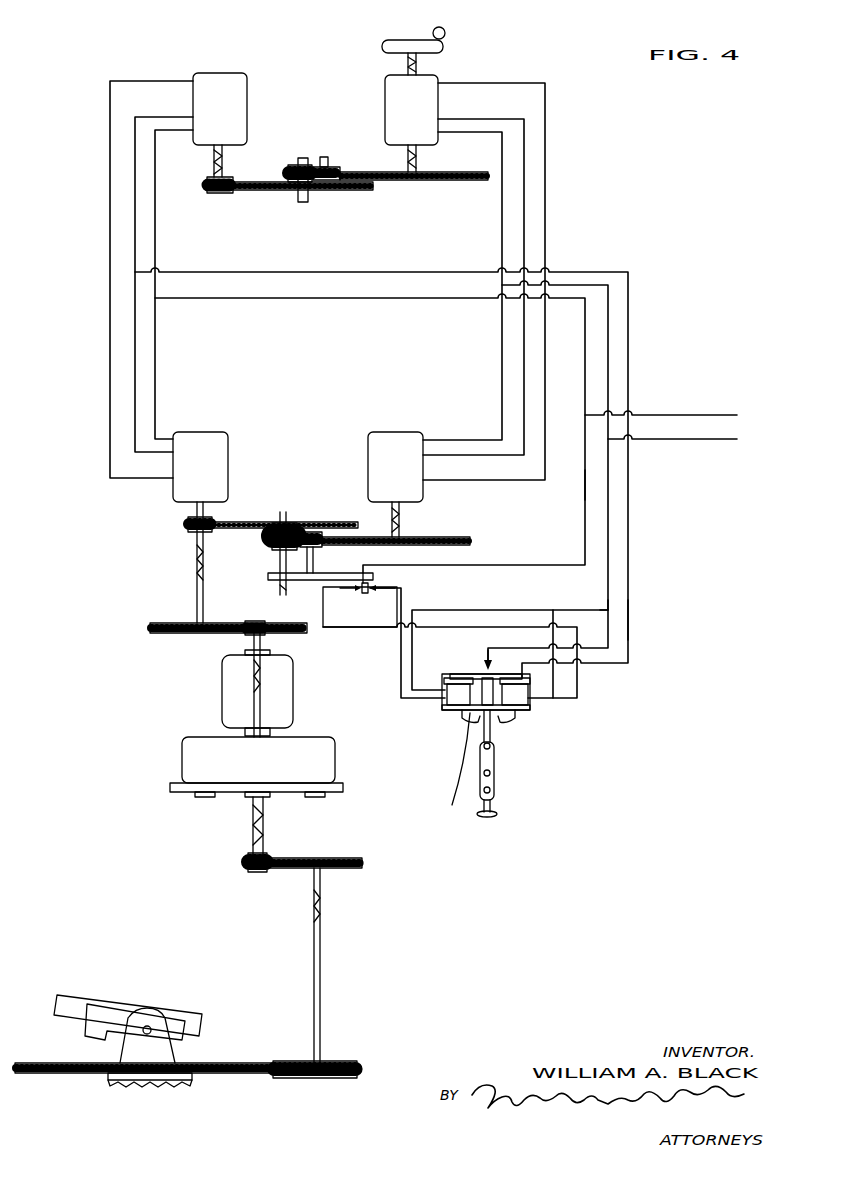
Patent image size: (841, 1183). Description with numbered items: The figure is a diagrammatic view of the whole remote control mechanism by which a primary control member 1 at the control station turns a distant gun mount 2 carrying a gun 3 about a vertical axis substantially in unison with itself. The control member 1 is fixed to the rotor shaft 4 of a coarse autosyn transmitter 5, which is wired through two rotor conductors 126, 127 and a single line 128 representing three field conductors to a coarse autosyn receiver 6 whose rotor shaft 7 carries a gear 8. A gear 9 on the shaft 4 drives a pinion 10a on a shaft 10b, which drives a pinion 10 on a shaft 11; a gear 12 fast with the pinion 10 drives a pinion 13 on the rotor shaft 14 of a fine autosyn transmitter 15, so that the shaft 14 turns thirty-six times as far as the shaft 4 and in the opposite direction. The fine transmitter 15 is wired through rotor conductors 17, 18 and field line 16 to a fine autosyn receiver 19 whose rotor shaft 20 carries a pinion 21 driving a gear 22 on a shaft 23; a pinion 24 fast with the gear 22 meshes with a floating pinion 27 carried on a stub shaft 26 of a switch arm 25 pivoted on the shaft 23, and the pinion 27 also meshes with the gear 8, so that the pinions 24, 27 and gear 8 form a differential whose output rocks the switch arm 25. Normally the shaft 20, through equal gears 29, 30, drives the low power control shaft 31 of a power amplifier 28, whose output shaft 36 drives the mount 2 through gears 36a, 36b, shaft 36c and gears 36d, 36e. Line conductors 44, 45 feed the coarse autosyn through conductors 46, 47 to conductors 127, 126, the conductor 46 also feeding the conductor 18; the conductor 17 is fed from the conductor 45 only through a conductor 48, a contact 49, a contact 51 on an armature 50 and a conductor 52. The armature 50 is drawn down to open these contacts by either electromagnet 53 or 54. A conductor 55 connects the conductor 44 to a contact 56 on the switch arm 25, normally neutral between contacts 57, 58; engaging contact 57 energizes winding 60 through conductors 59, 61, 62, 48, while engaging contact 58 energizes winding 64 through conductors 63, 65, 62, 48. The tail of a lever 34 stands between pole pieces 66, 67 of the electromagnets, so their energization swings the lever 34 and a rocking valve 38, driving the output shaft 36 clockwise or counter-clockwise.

The primary control member 1 is at (446, 32).
The gun mount 2 is at (152, 1022).
The gun 3 is at (78, 1000).
The rotor shaft 4 is at (418, 163).
The coarse autosyn transmitter 5 is at (378, 104).
The coarse autosyn receiver 6 is at (360, 490).
The rotor shaft 7 is at (400, 524).
The gear 8 is at (450, 538).
The gear 9 is at (447, 181).
The pinion 10 is at (289, 168).
The pinion 10a is at (340, 168).
The shaft 10b is at (328, 158).
The shaft 11 is at (306, 200).
The gear 12 is at (292, 191).
The pinion 13 is at (217, 194).
The rotor shaft 14 is at (213, 160).
The fine autosyn transmitter 15 is at (258, 98).
The field conductors 16 is at (110, 380).
The rotor conductor 17 is at (135, 380).
The rotor conductor 18 is at (155, 380).
The fine autosyn receiver 19 is at (240, 490).
The rotor shaft 20 is at (197, 560).
The pinion 21 is at (188, 525).
The gear 22 is at (236, 529).
The shaft 23 is at (285, 512).
The pinion 24 is at (272, 542).
The switch arm 25 is at (268, 578).
The stub shaft 26 is at (313, 566).
The pinion 27 is at (340, 546).
The power amplifier 28 is at (172, 770).
The gear 29 is at (152, 633).
The gear 30 is at (250, 634).
The low power control shaft 31 is at (255, 686).
The lever 34 is at (496, 768).
The output shaft 36 is at (264, 816).
The gear 36a is at (249, 862).
The gear 36b is at (362, 862).
The shaft 36c is at (321, 945).
The gear 36d is at (345, 1062).
The gear 36e is at (76, 1074).
The rocking valve 38 is at (494, 806).
The line conductor 44 is at (672, 415).
The line conductor 45 is at (670, 440).
The conductor 46 is at (388, 298).
The conductor 47 is at (608, 373).
The conductor 48 is at (628, 538).
The switch contact 49 is at (486, 660).
The electromagnet armature 50 is at (450, 676).
The contact 51 is at (482, 678).
The conductor 52 is at (628, 620).
The electromagnet 53 is at (540, 712).
The electromagnet 54 is at (436, 714).
The conductor 55 is at (585, 478).
The contact 56 is at (366, 594).
The contact 57 is at (340, 594).
The contact 58 is at (378, 584).
The conductor 59 is at (577, 698).
The winding 60 is at (515, 700).
The conductor 61 is at (553, 684).
The conductor 62 is at (605, 610).
The conductor 63 is at (401, 650).
The winding 64 is at (460, 700).
The conductor 65 is at (468, 610).
The pole piece 66 is at (513, 720).
The pole piece 67 is at (462, 770).
The rotor conductor 126 is at (502, 228).
The rotor conductor 127 is at (524, 248).
The field conductors 128 is at (545, 225).